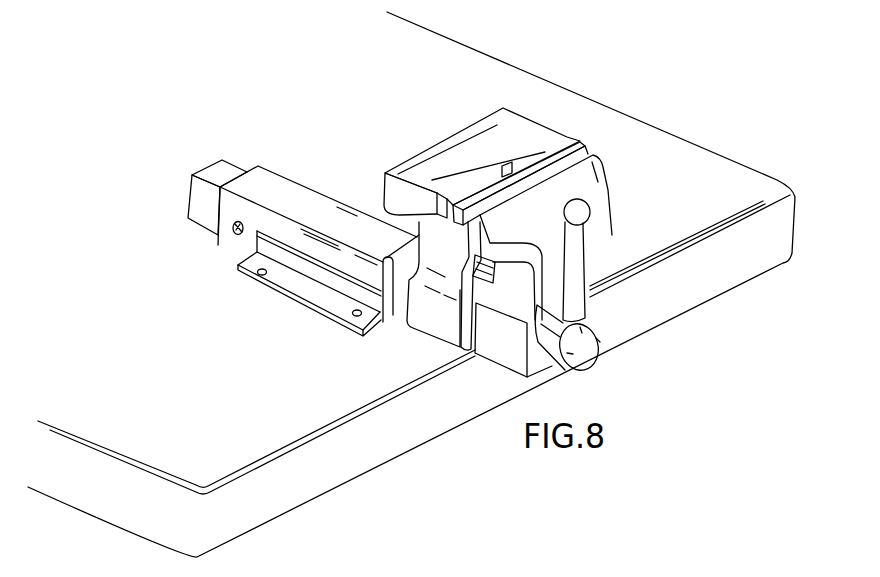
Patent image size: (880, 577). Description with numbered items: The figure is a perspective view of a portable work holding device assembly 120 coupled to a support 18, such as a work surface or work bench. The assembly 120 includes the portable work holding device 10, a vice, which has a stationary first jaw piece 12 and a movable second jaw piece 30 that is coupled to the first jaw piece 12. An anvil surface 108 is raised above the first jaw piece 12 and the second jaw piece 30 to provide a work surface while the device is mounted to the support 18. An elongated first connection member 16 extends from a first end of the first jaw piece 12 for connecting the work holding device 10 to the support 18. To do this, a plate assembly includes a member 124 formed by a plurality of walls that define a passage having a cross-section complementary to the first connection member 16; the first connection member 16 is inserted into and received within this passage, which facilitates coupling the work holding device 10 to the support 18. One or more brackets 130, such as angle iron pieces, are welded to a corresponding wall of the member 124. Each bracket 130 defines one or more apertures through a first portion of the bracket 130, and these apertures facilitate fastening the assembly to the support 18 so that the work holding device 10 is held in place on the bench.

The portable work holding device 10 is at (588, 107).
The stationary first jaw piece 12 is at (468, 143).
The first connection member 16 is at (203, 217).
The support 18 is at (695, 158).
The movable second jaw piece 30 is at (607, 177).
The anvil surface 108 is at (511, 133).
The portable work holding device assembly 120 is at (364, 146).
The member 124 is at (282, 190).
The bracket 130 is at (313, 292).